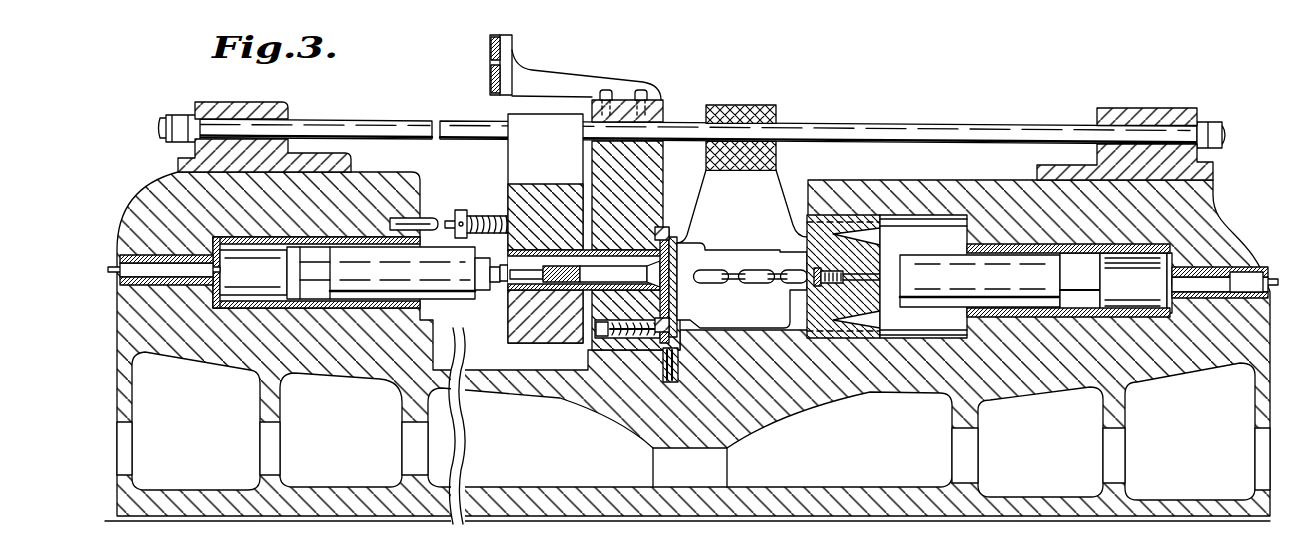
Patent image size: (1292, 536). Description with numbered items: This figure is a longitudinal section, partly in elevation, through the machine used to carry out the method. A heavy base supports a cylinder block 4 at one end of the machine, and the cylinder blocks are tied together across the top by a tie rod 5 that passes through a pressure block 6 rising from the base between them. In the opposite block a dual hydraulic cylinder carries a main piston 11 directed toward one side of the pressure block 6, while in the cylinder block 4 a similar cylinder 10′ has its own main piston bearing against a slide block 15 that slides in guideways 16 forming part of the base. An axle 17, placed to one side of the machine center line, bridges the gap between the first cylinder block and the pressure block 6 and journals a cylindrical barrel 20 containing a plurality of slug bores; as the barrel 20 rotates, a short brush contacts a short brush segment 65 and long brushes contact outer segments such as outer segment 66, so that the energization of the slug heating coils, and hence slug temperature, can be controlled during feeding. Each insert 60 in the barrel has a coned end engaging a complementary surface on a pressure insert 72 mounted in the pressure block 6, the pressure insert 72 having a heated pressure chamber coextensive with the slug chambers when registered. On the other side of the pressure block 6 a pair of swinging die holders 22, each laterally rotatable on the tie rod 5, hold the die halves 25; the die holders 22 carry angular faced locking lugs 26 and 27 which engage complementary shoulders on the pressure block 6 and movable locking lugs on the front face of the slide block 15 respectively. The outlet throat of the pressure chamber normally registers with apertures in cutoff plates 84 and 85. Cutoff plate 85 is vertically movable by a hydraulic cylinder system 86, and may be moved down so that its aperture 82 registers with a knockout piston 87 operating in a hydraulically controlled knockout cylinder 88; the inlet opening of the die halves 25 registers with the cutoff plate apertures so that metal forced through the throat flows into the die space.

The cylinder block 4 is at (1204, 200).
The tie rod 5 is at (300, 119).
The pressure block 6 is at (621, 110).
The cylinder 10′ is at (1167, 247).
The main piston 11 is at (366, 266).
The slide block 15 is at (827, 227).
The guideways 16 is at (908, 220).
The axle 17 is at (433, 210).
The cylindrical barrel 20 is at (520, 150).
The swinging die holders 22 is at (758, 193).
The die halves 25 is at (765, 271).
The locking lug 26 is at (680, 240).
The locking lug 27 is at (795, 225).
The insert 60 is at (513, 262).
The short brush segment 65 is at (491, 80).
The outer segment 66 is at (491, 45).
The pressure insert 72 is at (585, 180).
The aperture 82 is at (677, 268).
The cutoff plate 84 is at (668, 228).
The cutoff plate 85 is at (668, 305).
The hydraulic cylinder system 86 is at (665, 352).
The knockout piston 87 is at (640, 326).
The knockout cylinder 88 is at (600, 335).